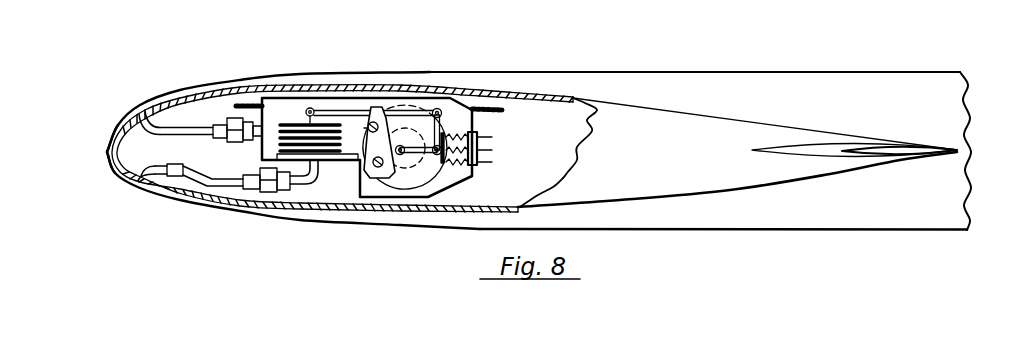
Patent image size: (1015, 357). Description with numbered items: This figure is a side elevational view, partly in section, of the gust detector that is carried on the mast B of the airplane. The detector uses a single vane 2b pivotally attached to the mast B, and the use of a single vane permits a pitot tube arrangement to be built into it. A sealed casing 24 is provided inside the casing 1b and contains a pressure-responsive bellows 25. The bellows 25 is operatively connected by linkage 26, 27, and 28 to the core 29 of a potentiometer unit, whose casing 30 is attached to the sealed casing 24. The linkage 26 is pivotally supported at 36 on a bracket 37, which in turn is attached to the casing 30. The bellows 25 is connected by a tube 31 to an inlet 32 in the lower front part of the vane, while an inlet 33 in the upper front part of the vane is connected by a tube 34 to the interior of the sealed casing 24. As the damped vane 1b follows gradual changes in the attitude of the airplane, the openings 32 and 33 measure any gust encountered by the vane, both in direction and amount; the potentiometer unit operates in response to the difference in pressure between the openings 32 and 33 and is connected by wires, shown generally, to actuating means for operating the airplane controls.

The mast B is at (884, 75).
The single vane 2b is at (905, 150).
The casing 1b is at (128, 124).
The sealed casing 24 is at (302, 93).
The pressure-responsive bellows 25 is at (329, 156).
The linkage 26 is at (401, 112).
The linkage 27 is at (440, 119).
The linkage 28 is at (418, 146).
The core of potentiometer unit 29 is at (420, 158).
The casing of potentiometer unit 30 is at (418, 178).
The tube 31 is at (213, 177).
The inlet 32 is at (141, 177).
The inlet 33 is at (148, 96).
The tube 34 is at (208, 121).
The pivot 36 is at (371, 107).
The bracket 37 is at (366, 132).